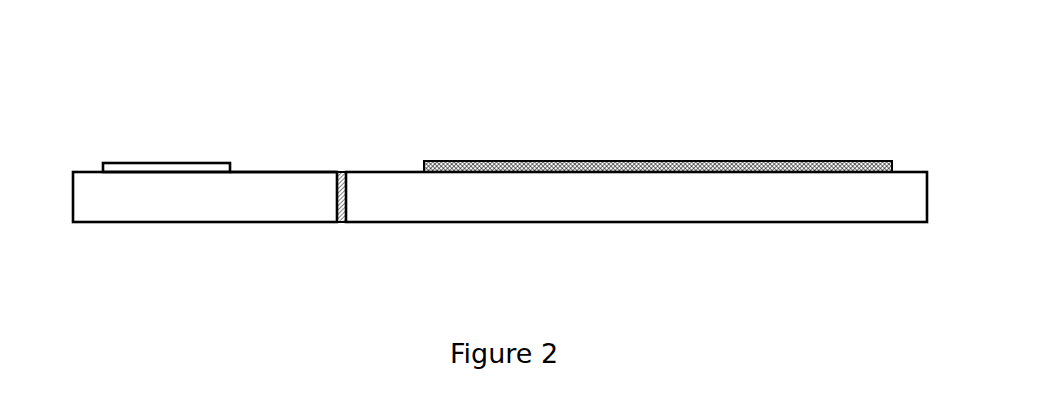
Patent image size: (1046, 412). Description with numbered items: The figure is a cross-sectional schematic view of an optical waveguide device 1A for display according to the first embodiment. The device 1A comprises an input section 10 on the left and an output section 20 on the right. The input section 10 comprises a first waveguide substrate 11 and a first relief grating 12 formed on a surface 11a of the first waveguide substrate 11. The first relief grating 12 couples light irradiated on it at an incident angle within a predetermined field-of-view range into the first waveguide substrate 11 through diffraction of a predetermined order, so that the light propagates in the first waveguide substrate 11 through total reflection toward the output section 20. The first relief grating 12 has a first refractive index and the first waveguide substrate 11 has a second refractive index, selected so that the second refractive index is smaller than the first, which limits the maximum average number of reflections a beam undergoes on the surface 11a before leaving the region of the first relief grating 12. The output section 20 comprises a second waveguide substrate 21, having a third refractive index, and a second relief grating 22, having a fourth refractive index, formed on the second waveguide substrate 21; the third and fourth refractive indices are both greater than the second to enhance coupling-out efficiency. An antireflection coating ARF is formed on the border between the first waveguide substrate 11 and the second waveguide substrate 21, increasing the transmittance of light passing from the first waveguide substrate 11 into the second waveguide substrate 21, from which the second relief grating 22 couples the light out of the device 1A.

The optical waveguide device for display 1A is at (362, 59).
The input section 10 is at (156, 112).
The first waveguide substrate 11 is at (242, 224).
The surface of the first waveguide substrate 11a is at (277, 171).
The first relief grating 12 is at (213, 160).
The antireflection coating ARF is at (340, 224).
The output section 20 is at (598, 112).
The second waveguide substrate 21 is at (712, 224).
The second relief grating 22 is at (792, 160).